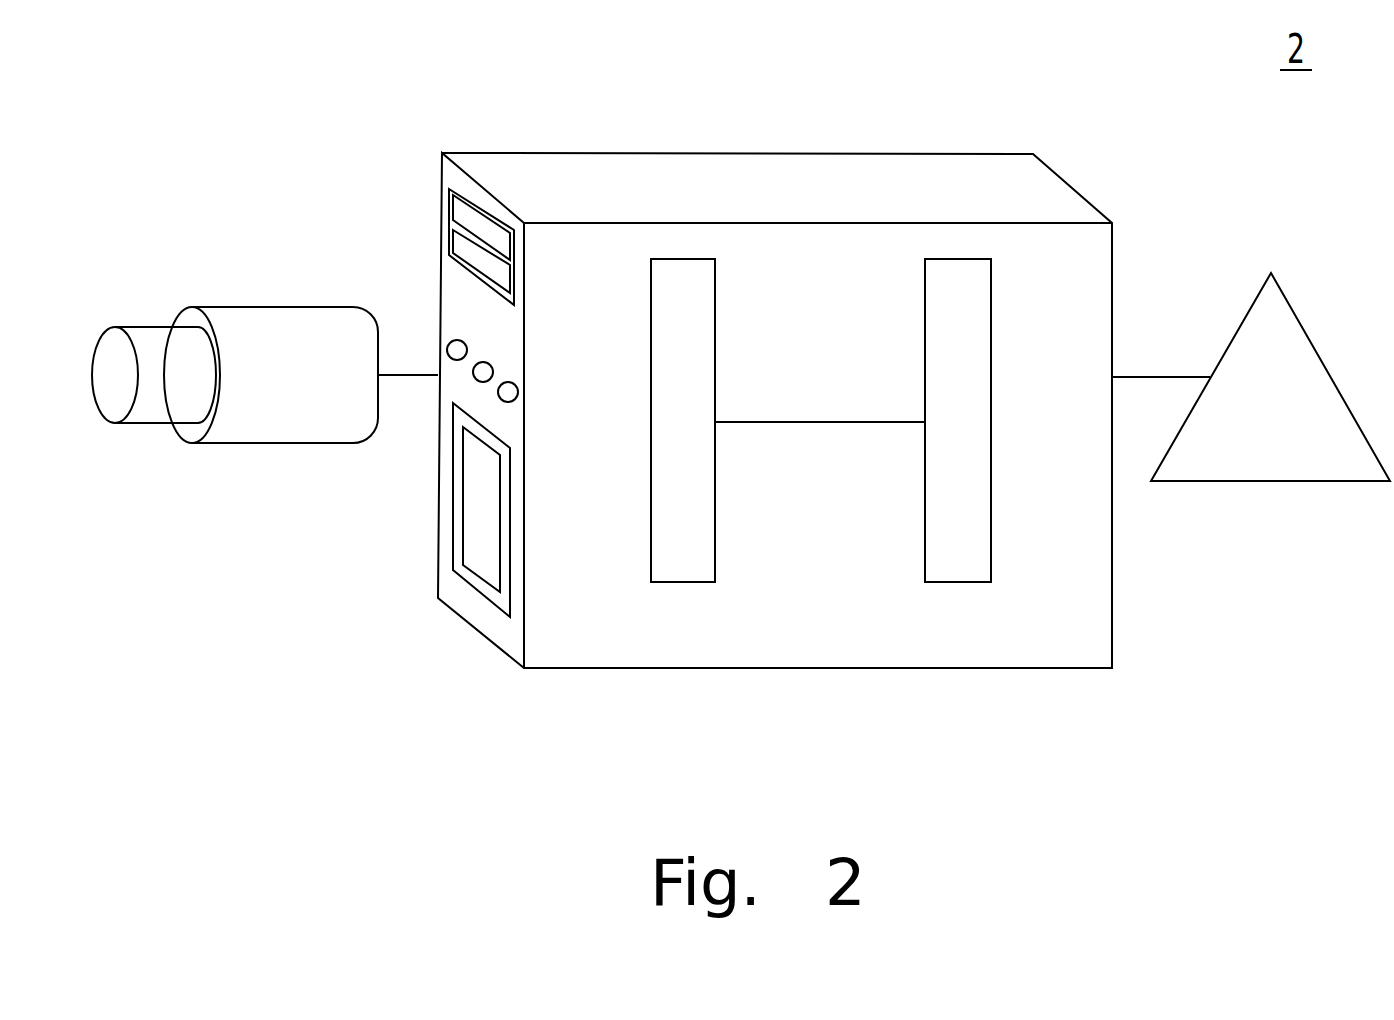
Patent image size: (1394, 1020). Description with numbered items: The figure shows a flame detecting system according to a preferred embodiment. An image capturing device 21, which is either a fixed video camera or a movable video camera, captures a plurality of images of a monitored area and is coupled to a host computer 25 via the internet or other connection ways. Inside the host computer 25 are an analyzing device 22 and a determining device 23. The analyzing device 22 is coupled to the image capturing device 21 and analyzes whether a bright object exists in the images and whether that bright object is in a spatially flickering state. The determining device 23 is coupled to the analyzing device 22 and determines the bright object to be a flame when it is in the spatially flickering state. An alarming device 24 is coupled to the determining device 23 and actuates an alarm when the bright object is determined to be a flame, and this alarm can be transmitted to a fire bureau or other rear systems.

The image capturing device 21 is at (231, 318).
The analyzing device 22 is at (693, 568).
The determining device 23 is at (968, 570).
The alarming device 24 is at (1282, 333).
The host computer 25 is at (797, 172).